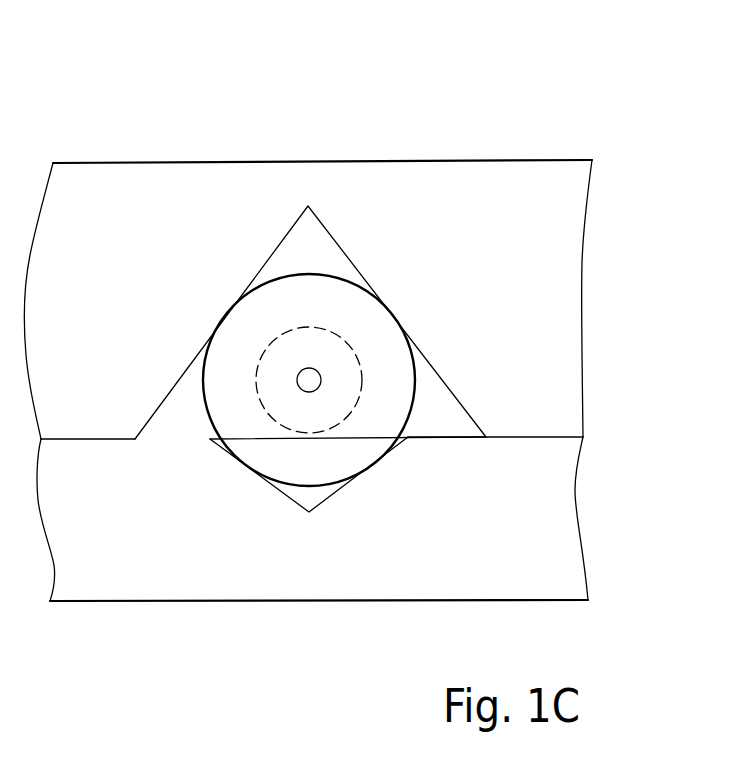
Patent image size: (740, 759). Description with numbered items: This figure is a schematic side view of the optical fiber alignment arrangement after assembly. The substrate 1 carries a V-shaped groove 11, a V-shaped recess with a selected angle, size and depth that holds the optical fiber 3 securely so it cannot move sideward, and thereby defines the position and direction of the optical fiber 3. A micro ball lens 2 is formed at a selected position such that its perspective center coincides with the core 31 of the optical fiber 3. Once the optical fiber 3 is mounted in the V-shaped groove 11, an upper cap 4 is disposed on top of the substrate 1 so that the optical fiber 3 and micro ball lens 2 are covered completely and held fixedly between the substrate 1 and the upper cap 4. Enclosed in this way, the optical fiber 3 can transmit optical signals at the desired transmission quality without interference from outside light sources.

The substrate 1 is at (369, 568).
The V-shaped groove 11 is at (282, 480).
The micro ball lens 2 is at (272, 357).
The optical fiber 3 is at (318, 297).
The core 31 is at (309, 380).
The upper cap 4 is at (108, 212).